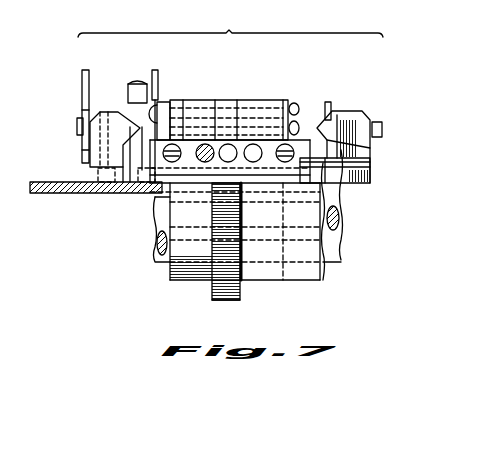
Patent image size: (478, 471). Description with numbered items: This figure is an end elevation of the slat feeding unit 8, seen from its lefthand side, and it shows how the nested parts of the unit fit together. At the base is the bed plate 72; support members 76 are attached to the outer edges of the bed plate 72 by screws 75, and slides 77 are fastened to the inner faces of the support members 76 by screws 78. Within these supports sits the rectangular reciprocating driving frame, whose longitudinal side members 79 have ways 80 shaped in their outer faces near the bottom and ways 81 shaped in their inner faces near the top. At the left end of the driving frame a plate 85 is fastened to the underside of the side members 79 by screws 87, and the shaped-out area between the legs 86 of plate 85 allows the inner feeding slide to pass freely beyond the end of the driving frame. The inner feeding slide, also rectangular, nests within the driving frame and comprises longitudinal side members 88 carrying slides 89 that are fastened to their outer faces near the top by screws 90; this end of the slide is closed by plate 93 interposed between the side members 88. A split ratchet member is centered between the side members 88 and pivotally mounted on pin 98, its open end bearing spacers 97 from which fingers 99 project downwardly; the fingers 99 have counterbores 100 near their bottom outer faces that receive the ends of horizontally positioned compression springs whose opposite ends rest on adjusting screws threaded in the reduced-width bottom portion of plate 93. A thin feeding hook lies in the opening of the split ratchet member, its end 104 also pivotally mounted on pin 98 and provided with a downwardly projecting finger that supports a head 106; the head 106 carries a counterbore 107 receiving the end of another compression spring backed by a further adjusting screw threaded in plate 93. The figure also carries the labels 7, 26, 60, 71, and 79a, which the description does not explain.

The slat feeding unit 8 is at (230, 26).
The base plate 7 is at (38, 193).
The upright post 26 is at (82, 79).
The screws 78 is at (80, 126).
The slides 77 is at (130, 123).
The support members 76 is at (92, 140).
The screws 75 is at (100, 172).
The post 79a is at (153, 85).
The longitudinal side members 79 is at (130, 93).
The ways 81 is at (160, 102).
The opposite end of feeding hook 104 is at (228, 100).
The longitudinal side members 88 is at (172, 140).
The slides 89 is at (185, 100).
The plate 93 is at (230, 102).
The pin 98 is at (233, 102).
The spacers 97 is at (250, 107).
The screws 90 is at (302, 103).
The counterbore 107 is at (222, 166).
The counterbores 100 is at (252, 163).
The screws 87 is at (150, 195).
The head 106 is at (233, 162).
The shaft 71 is at (241, 292).
The fingers 99 is at (247, 162).
The shaft 60 is at (336, 230).
The plate 85 is at (330, 182).
The ways 80 is at (368, 150).
The legs 86 is at (370, 163).
The bed plate 72 is at (370, 180).